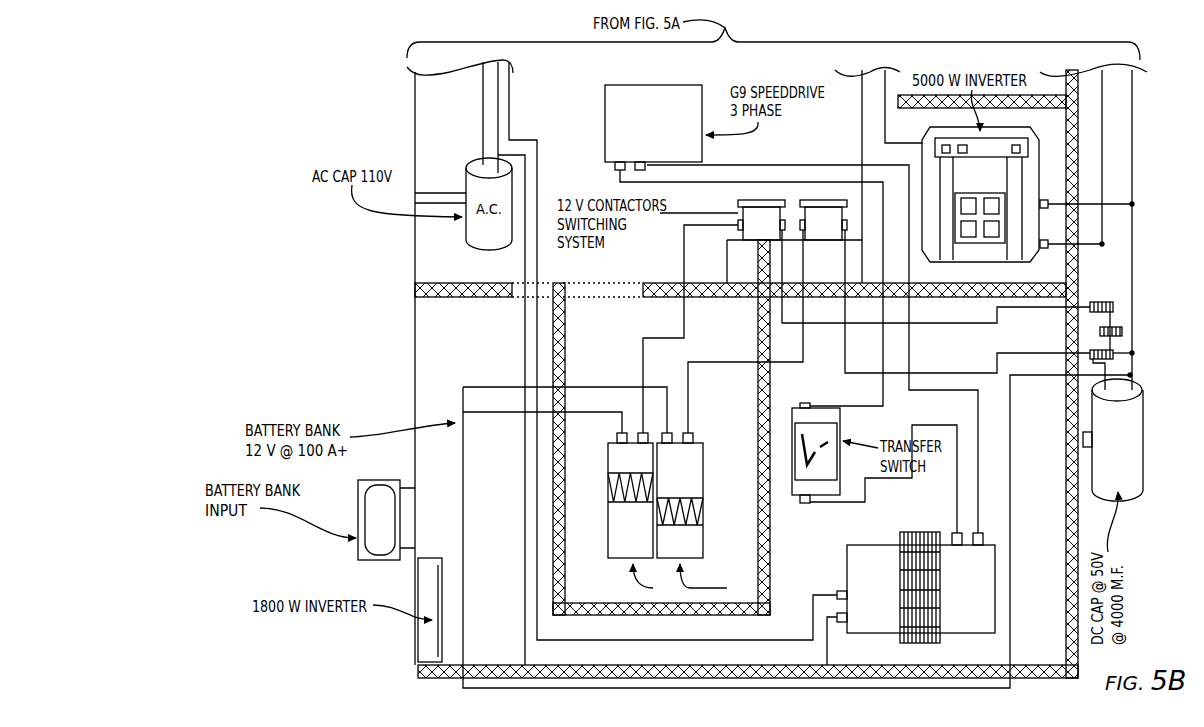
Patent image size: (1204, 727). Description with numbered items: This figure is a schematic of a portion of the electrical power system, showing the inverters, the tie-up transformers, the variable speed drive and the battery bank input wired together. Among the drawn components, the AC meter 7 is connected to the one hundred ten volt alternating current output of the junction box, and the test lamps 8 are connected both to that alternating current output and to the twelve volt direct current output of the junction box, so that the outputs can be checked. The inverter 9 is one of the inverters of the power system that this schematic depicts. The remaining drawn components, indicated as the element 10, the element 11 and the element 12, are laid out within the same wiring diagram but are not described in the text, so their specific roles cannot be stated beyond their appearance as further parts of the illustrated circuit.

The AC meter 7 is at (794, 234).
The test lamps 8 is at (1109, 345).
The inverter 9 is at (1113, 440).
The transfer switch 10 is at (828, 453).
The relay contactors 11 is at (655, 495).
The transformer charger 12 is at (916, 587).